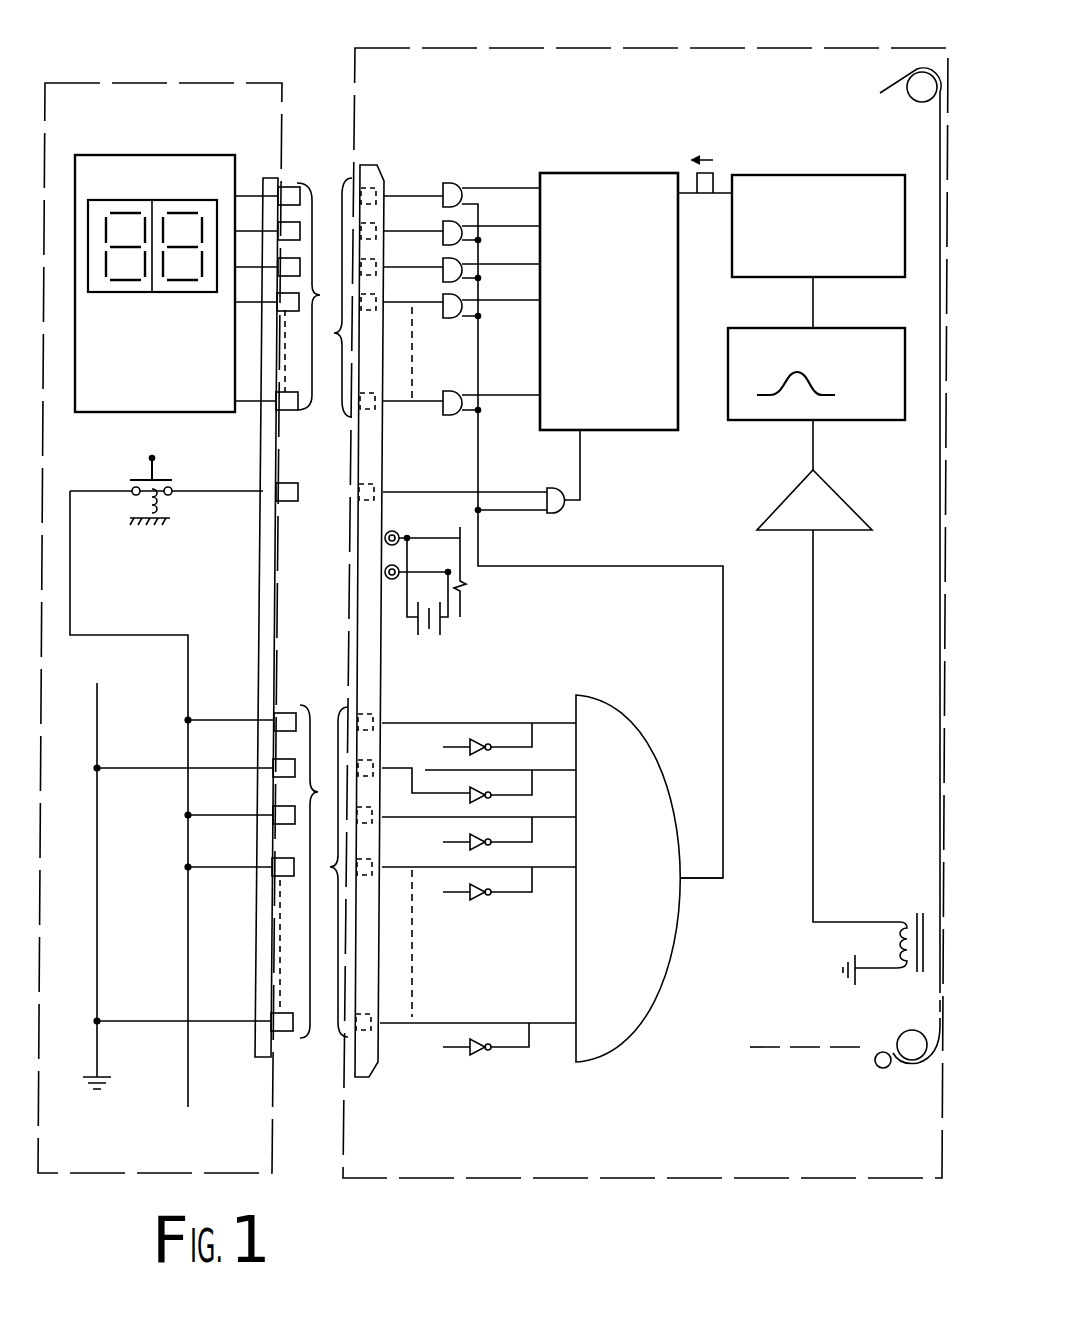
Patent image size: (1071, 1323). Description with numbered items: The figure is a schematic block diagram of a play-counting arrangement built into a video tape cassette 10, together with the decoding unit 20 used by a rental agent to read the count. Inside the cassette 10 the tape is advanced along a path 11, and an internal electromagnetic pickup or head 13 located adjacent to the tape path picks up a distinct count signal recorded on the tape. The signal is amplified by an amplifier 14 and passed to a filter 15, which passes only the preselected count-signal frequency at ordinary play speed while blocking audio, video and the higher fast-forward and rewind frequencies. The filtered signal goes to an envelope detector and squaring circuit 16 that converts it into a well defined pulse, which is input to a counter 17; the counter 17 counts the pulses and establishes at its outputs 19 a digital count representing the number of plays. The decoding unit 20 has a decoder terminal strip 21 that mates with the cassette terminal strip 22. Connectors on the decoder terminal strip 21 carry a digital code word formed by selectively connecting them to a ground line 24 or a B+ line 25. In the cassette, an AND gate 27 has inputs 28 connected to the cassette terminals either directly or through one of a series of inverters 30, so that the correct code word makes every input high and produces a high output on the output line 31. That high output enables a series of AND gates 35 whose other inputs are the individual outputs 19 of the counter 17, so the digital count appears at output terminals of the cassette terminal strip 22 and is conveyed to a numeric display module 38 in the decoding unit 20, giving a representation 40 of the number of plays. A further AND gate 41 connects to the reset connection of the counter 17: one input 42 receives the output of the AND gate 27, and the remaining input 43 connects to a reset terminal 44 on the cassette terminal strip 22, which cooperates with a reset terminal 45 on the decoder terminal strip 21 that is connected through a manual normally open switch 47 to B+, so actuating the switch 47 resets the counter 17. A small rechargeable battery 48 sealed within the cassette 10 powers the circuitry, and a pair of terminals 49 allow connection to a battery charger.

The video tape cassette 10 is at (648, 46).
The tape path 11 is at (940, 290).
The internal electromagnetic pickup or head 13 is at (915, 905).
The amplifier 14 is at (780, 510).
The filter 15 is at (768, 415).
The envelope detector and squaring circuit 16 is at (878, 276).
The counter 17 is at (602, 188).
The counter outputs 19 is at (515, 264).
The decoding unit 20 is at (210, 83).
The decoder terminal strip 21 is at (276, 192).
The cassette terminal strip 22 is at (360, 178).
The ground line 24 is at (98, 925).
The B+ line 25 is at (190, 948).
The AND gate 27 is at (625, 748).
The AND gate inputs 28 is at (562, 818).
The inverters 30 is at (465, 888).
The output line 31 is at (705, 888).
The AND gates 35 is at (446, 268).
The numeric display module 38 is at (90, 412).
The representation of the number of plays 40 is at (95, 248).
The AND gate 41 is at (553, 512).
The input 42 is at (500, 520).
The input 43 is at (515, 490).
The reset terminal 44 is at (359, 492).
The reset terminal 45 is at (298, 492).
The manual normally open switch 47 is at (157, 466).
The rechargeable battery 48 is at (437, 630).
The terminals 49 is at (384, 574).